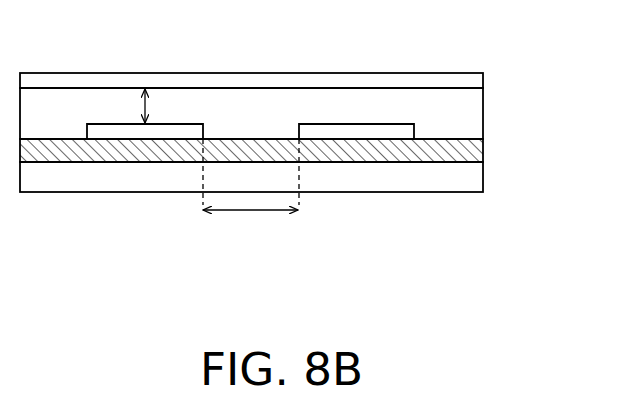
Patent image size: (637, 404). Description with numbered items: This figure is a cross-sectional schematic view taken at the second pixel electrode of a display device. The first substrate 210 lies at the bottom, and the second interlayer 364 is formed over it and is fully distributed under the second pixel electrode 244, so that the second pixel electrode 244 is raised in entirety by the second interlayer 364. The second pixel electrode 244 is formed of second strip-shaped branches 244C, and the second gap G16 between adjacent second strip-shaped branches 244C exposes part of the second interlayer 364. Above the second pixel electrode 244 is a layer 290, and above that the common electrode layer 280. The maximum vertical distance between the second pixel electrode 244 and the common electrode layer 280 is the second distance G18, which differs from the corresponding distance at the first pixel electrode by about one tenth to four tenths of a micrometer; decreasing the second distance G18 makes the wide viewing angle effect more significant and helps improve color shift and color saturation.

The common electrode layer 280 is at (465, 81).
The dielectric layer 290 is at (465, 126).
The second interlayer 364 is at (462, 151).
The first substrate 210 is at (457, 179).
The second pixel electrode 244 is at (177, 128).
The second strip-shaped branches 244C is at (370, 130).
The second distance G18 is at (145, 108).
The second gap G16 is at (251, 195).